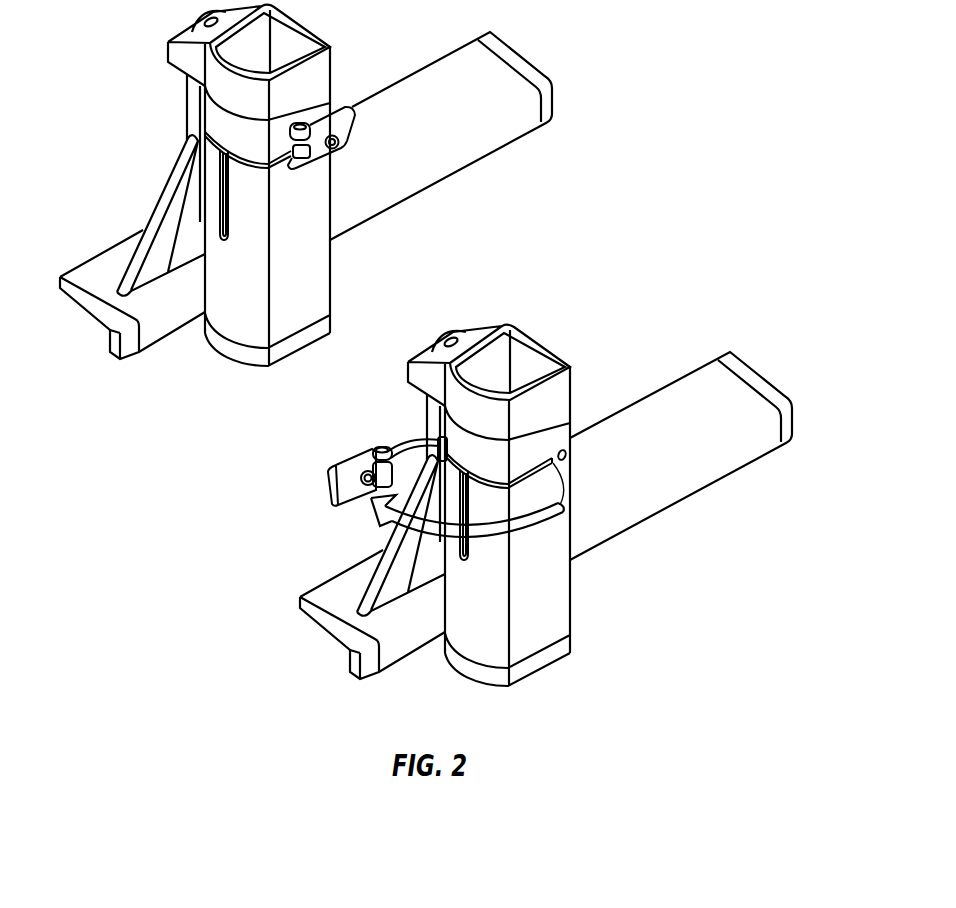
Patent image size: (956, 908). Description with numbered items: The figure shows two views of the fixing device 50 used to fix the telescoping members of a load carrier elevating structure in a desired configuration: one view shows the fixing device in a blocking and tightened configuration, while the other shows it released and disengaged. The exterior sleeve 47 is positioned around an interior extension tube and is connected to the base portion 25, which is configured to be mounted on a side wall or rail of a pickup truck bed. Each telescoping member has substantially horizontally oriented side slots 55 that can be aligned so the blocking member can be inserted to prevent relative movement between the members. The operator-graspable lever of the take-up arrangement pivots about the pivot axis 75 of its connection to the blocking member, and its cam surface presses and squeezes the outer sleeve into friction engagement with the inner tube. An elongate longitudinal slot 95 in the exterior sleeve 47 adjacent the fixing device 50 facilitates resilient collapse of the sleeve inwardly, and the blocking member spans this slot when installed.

The base portion 25 is at (436, 216).
The exterior sleeve 47 is at (313, 258).
The fixing device 50 is at (352, 88).
The side slots 55 is at (215, 130).
The pivot axis 75 is at (368, 436).
The longitudinal slot 95 is at (218, 222).